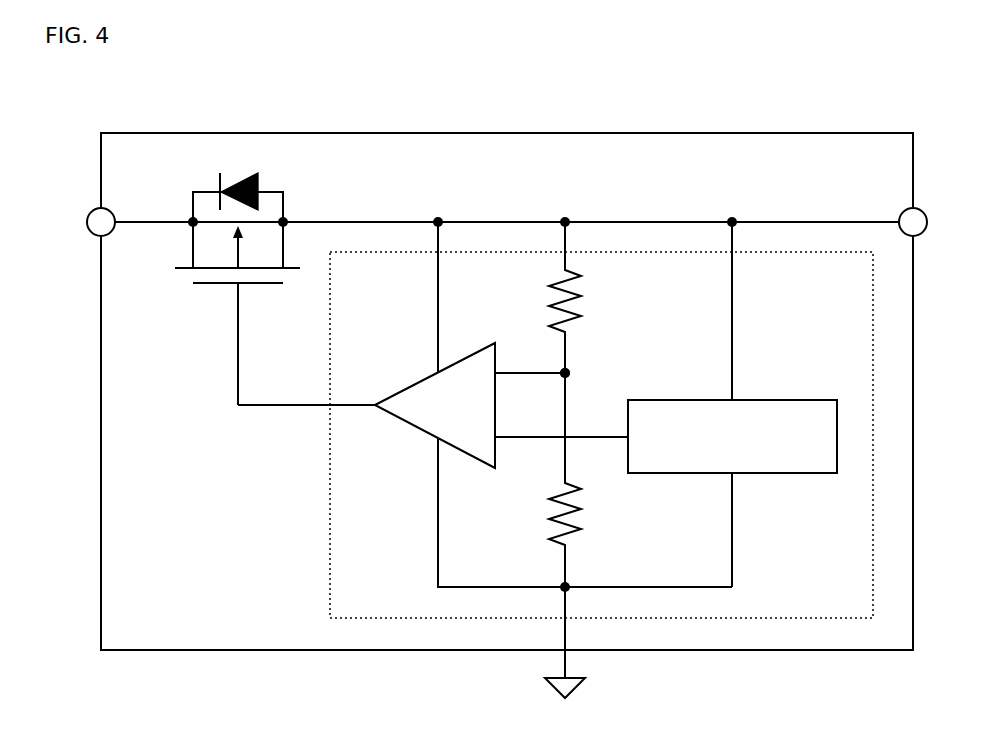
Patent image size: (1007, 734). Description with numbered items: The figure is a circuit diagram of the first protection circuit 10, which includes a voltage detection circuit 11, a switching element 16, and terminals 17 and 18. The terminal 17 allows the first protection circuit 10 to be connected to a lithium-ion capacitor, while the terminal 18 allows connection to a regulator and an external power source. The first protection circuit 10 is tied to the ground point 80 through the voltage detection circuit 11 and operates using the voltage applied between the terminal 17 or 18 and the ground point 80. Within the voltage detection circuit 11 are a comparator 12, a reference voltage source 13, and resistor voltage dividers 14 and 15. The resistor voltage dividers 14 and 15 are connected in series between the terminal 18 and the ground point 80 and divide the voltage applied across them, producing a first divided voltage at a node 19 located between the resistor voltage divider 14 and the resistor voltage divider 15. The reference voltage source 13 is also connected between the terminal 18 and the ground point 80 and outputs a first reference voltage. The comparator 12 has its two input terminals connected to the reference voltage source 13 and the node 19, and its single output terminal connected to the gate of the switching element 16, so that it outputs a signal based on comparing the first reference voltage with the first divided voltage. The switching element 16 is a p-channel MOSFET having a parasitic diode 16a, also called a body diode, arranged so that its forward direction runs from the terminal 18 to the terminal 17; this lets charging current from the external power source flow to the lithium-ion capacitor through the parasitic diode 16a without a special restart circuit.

The first protection circuit 10 is at (742, 133).
The voltage detection circuit 11 is at (330, 517).
The comparator 12 is at (468, 353).
The reference voltage source 13 is at (783, 400).
The resistor voltage divider 14 is at (580, 302).
The resistor voltage divider 15 is at (580, 526).
The switching element 16 is at (213, 286).
The parasitic diode 16a is at (245, 172).
The terminal 17 is at (91, 212).
The terminal 18 is at (928, 214).
The node 19 is at (575, 371).
The ground point 80 is at (580, 690).